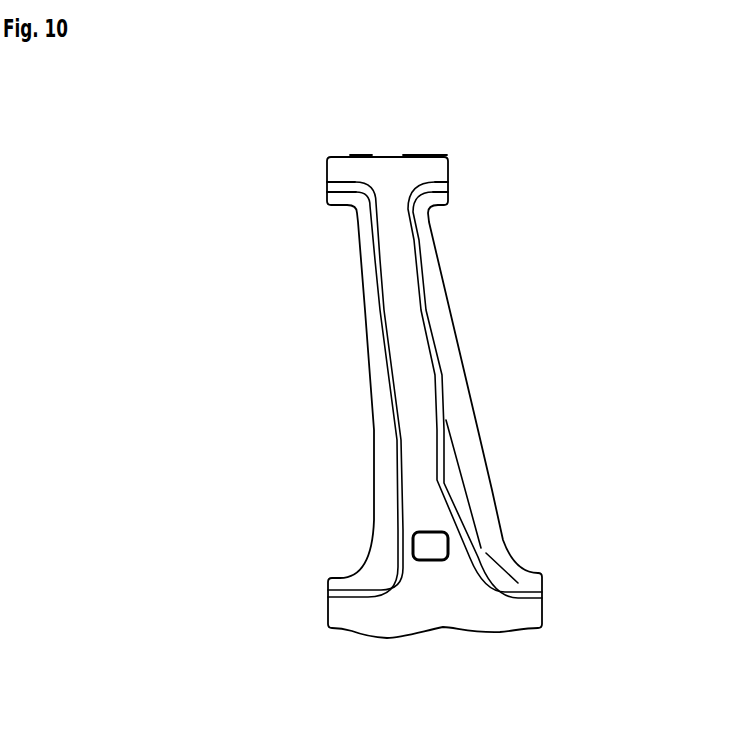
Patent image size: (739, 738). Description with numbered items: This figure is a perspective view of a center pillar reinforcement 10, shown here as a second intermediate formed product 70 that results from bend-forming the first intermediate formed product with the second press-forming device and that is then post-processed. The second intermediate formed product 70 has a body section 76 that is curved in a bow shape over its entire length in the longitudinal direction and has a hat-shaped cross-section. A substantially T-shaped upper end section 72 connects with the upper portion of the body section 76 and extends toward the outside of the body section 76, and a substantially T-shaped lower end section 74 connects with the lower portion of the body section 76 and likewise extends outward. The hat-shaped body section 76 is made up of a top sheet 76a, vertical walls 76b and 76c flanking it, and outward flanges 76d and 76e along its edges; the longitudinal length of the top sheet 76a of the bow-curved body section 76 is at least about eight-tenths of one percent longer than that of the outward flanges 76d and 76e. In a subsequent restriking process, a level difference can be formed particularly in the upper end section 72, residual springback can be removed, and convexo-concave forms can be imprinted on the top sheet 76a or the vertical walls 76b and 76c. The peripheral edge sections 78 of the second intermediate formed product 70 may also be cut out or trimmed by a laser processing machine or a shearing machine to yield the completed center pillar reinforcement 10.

The center pillar reinforcement 10 is at (571, 186).
The second intermediate formed product 70 is at (475, 405).
The upper end section 72 is at (388, 169).
The lower end section 74 is at (430, 606).
The body section 76 is at (412, 337).
The top sheet 76a is at (400, 283).
The vertical wall 76b is at (392, 412).
The vertical wall 76c is at (444, 406).
The outward flange 76d is at (384, 465).
The outward flange 76e is at (468, 450).
The peripheral edge section 78 is at (363, 157).